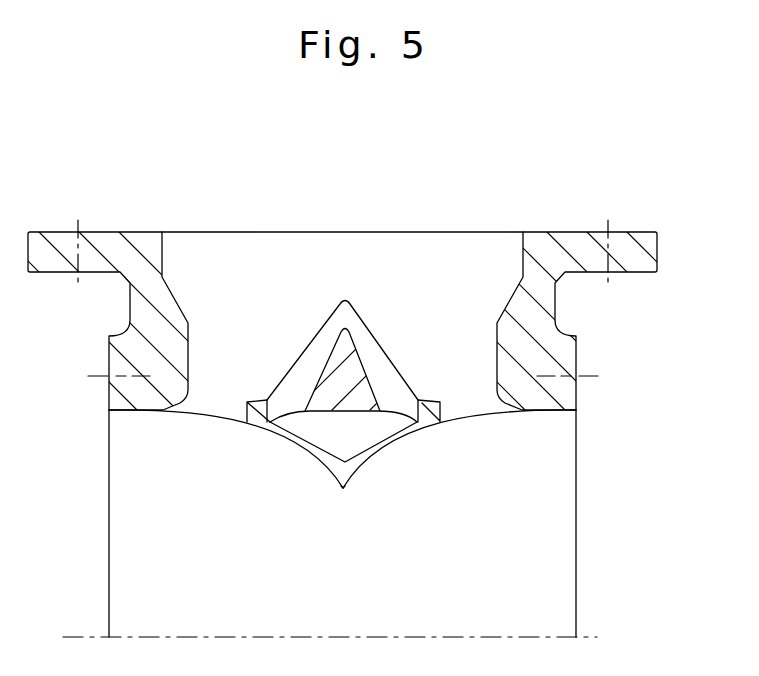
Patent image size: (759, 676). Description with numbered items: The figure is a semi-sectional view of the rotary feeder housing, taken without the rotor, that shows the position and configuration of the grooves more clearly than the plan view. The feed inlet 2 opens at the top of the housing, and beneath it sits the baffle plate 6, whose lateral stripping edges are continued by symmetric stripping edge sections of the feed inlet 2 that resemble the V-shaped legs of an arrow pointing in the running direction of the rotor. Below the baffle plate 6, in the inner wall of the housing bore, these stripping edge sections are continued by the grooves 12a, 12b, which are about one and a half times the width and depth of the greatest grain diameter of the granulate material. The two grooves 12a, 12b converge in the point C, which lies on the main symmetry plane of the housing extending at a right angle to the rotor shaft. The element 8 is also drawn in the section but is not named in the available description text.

The feed inlet 2 is at (577, 362).
The baffle plate 6 is at (373, 352).
The wedge element 8 is at (343, 433).
The groove 12a is at (397, 440).
The groove 12b is at (293, 443).
The point C is at (343, 488).